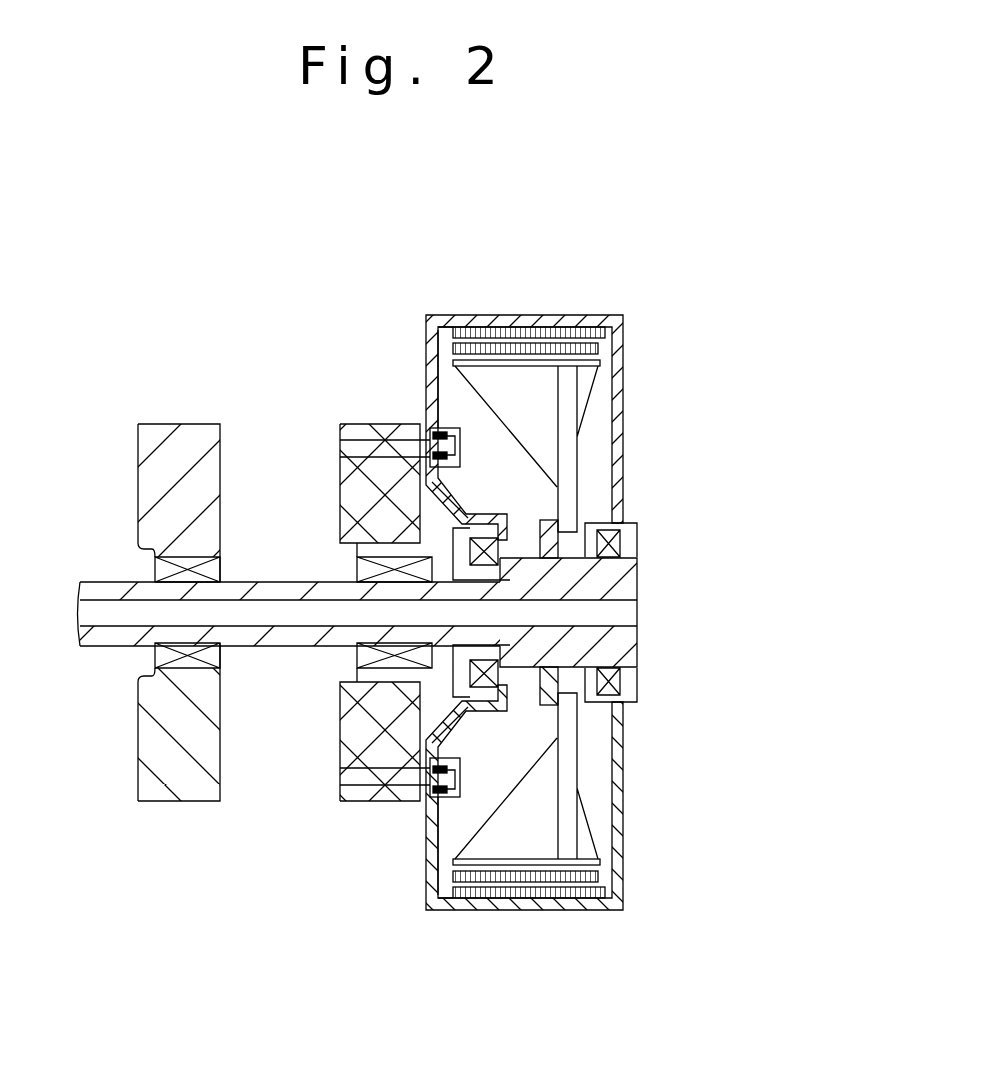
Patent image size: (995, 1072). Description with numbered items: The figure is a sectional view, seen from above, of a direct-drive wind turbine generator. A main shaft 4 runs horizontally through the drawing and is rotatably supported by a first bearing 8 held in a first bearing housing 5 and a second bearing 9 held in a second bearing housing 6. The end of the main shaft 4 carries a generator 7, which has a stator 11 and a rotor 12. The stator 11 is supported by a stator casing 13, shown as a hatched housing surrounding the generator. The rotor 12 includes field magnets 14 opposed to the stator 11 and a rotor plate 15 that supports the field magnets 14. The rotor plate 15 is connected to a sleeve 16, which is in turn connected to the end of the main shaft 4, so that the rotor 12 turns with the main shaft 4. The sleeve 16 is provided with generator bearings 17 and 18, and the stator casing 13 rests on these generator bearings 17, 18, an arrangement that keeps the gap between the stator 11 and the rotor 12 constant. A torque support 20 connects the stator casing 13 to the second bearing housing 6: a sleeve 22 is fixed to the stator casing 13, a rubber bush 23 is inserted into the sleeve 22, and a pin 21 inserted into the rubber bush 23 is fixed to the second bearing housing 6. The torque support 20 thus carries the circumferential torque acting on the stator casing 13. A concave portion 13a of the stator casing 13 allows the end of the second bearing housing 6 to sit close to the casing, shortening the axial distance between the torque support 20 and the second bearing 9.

The main shaft 4 is at (270, 582).
The first bearing housing 5 is at (165, 424).
The second bearing housing 6 is at (370, 428).
The generator 7 is at (677, 281).
The first bearing 8 is at (157, 570).
The second bearing 9 is at (357, 570).
The stator 11 is at (625, 330).
The rotor 12 is at (603, 483).
The stator casing 13 is at (425, 345).
The concave portion 13a is at (420, 528).
The field magnets 14 is at (600, 350).
The rotor plate 15 is at (620, 433).
The sleeve 16 is at (637, 635).
The generator bearing 17 is at (500, 574).
The generator bearing 18 is at (637, 545).
The torque support 20 is at (318, 392).
The pin 21 is at (340, 448).
The sleeve 22 is at (462, 455).
The rubber bush 23 is at (430, 428).